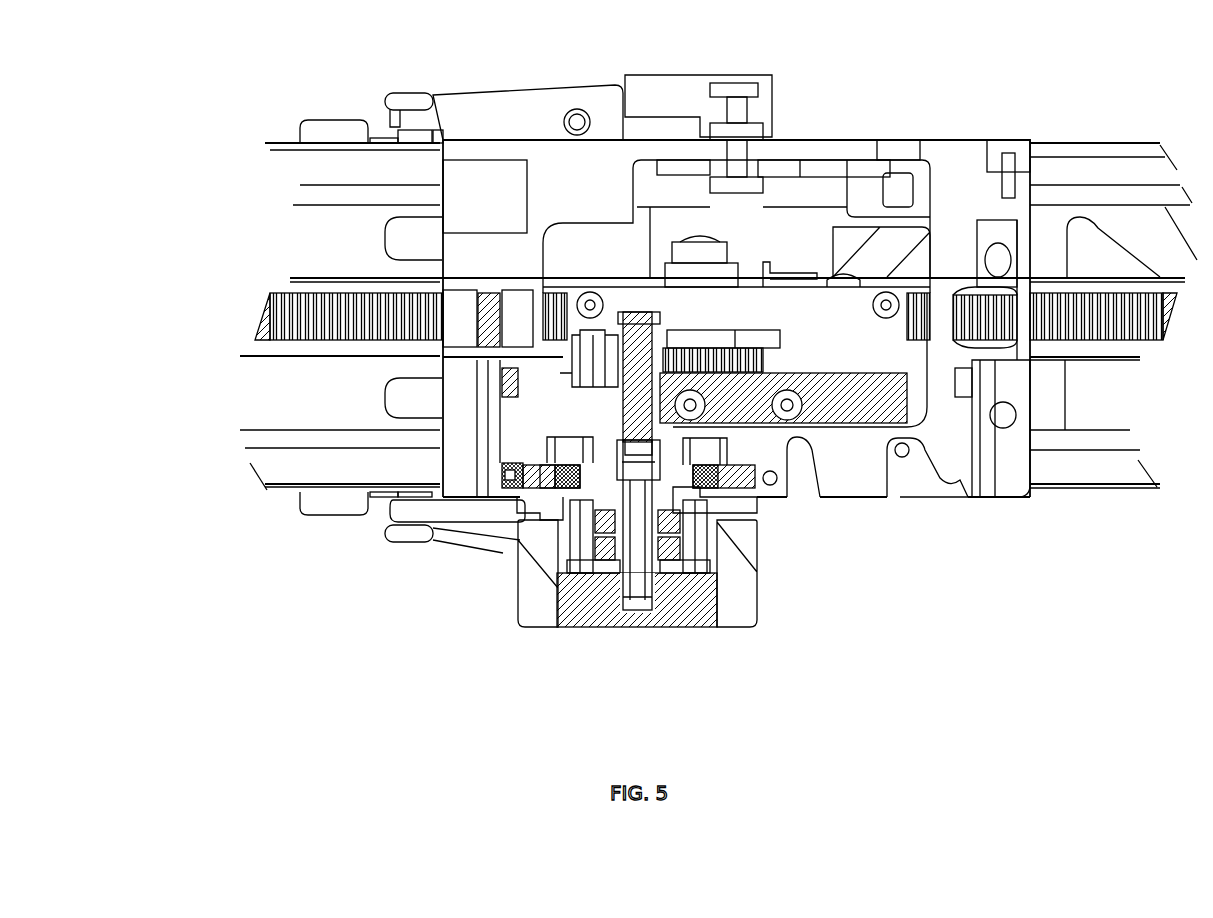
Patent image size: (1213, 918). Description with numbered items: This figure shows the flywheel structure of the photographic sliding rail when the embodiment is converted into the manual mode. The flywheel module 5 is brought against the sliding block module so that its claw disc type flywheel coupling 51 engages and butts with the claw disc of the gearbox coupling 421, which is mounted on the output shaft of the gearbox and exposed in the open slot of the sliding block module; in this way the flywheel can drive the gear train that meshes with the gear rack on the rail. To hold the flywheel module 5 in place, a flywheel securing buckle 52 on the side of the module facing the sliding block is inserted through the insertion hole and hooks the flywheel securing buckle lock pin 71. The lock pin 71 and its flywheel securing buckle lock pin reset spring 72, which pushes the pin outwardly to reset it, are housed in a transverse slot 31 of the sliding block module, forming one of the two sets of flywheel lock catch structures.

The flywheel module 5 is at (718, 623).
The claw disc type flywheel coupling 51 is at (712, 500).
The flywheel securing buckle 52 is at (525, 465).
The transverse slot 31 is at (505, 463).
The flywheel securing buckle lock pin 71 is at (573, 440).
The flywheel securing buckle lock pin reset spring 72 is at (560, 478).
The claw disc type gearbox coupling 421 is at (607, 452).